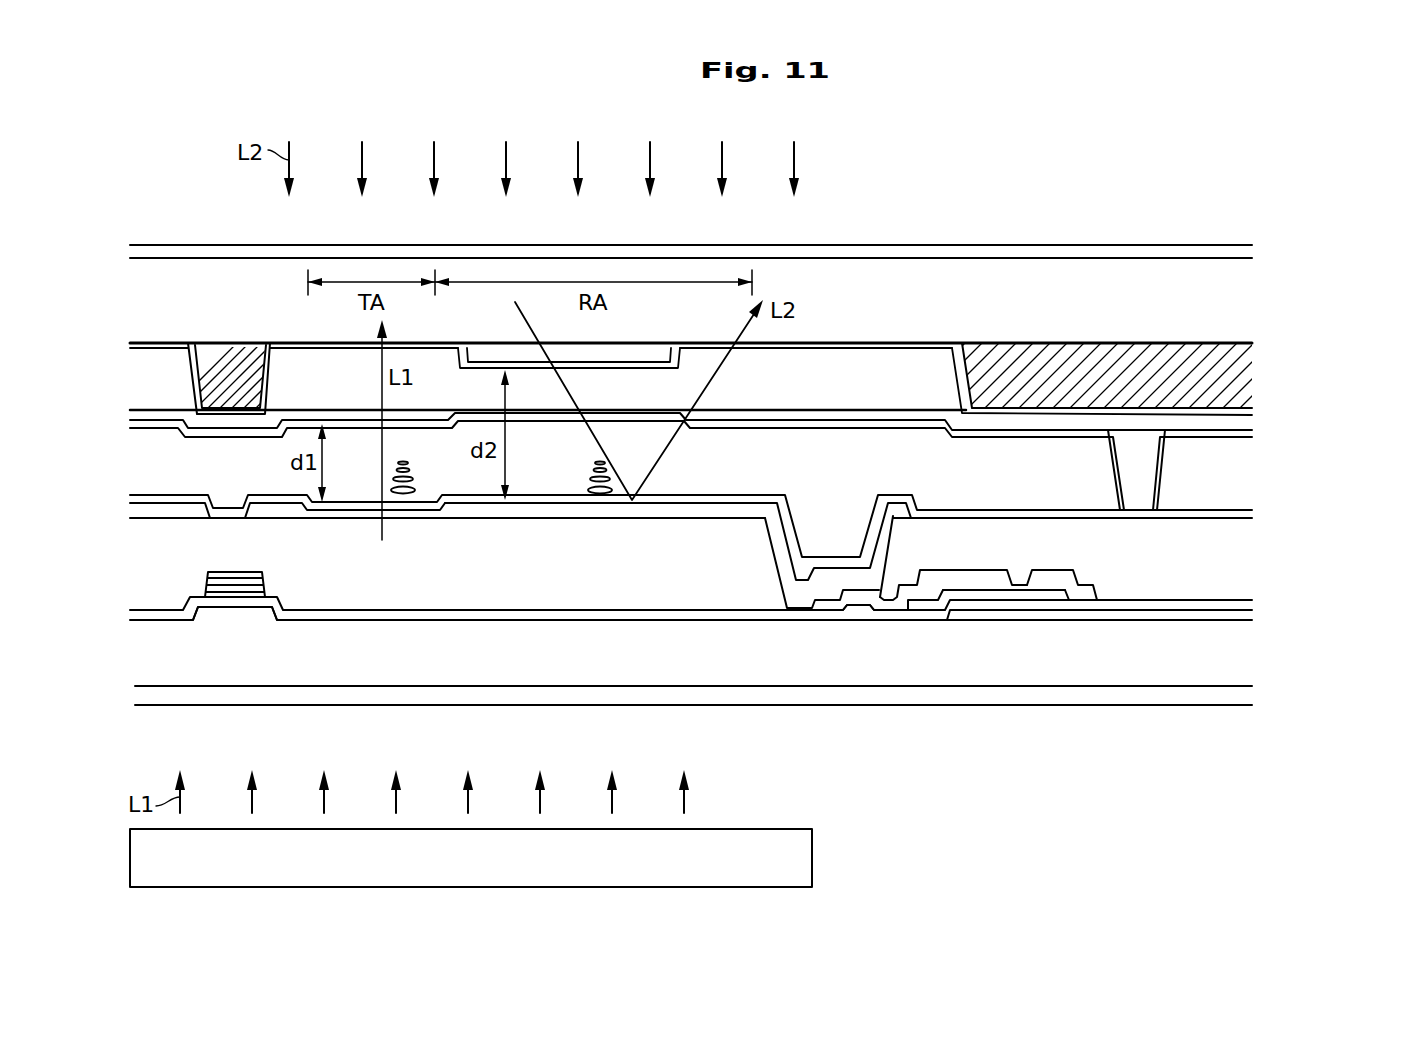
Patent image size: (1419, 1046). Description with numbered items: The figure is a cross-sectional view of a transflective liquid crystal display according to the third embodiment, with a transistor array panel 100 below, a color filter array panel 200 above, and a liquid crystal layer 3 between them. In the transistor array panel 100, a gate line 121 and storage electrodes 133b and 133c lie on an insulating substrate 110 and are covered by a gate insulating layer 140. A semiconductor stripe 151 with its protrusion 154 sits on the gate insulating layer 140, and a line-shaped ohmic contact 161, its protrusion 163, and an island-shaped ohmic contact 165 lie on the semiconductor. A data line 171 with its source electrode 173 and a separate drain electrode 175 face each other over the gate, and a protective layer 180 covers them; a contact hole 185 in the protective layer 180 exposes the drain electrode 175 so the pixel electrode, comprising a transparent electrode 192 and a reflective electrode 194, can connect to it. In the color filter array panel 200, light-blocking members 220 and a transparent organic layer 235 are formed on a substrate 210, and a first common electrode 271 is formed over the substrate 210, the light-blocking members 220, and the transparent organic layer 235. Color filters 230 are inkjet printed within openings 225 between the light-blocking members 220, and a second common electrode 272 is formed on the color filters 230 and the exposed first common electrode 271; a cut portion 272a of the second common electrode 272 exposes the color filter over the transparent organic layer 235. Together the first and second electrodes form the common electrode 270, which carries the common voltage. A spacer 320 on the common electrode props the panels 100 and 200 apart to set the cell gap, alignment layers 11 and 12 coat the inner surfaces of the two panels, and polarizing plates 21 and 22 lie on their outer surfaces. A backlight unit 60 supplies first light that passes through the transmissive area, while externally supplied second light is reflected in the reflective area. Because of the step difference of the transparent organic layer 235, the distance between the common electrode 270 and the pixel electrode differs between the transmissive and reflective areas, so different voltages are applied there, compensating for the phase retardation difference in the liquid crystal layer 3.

The polarizing plate 22 is at (1252, 251).
The insulating substrate 210 is at (1250, 298).
The color filter array panel 200 is at (1345, 332).
The color filter 230 is at (157, 355).
The light-blocking member 220 is at (230, 360).
The cut portion 272a is at (466, 412).
The transparent organic layer 235 is at (630, 358).
The opening 225 is at (962, 372).
The first common electrode 271 is at (1253, 412).
The second common electrode 272 is at (1252, 429).
The common electrode 270 is at (1322, 378).
The alignment layer 12 is at (1252, 438).
The spacer 320 is at (1148, 478).
The liquid crystal layer 3 is at (1292, 473).
The alignment layer 11 is at (1252, 512).
The transparent electrode 192 is at (655, 512).
The reflective electrode 194 is at (718, 502).
The protective layer 180 is at (1248, 557).
The contact hole 185 is at (880, 552).
The drain electrode 175 is at (960, 575).
The source electrode 173 is at (1090, 595).
The protrusion 154 is at (1033, 592).
The island-shaped ohmic contact 165 is at (985, 592).
The protrusion 163 is at (1055, 592).
The gate line 121 is at (1153, 615).
The storage electrode 133c is at (850, 608).
The gate insulating layer 140 is at (1252, 608).
The storage electrode 133b is at (205, 617).
The semiconductor stripe 151 is at (230, 594).
The line-shaped ohmic contact 161 is at (245, 587).
The data line 171 is at (256, 580).
The insulating substrate 110 is at (1250, 655).
The transistor array panel 100 is at (1346, 730).
The polarizing plate 21 is at (1228, 697).
The backlight unit 60 is at (812, 855).